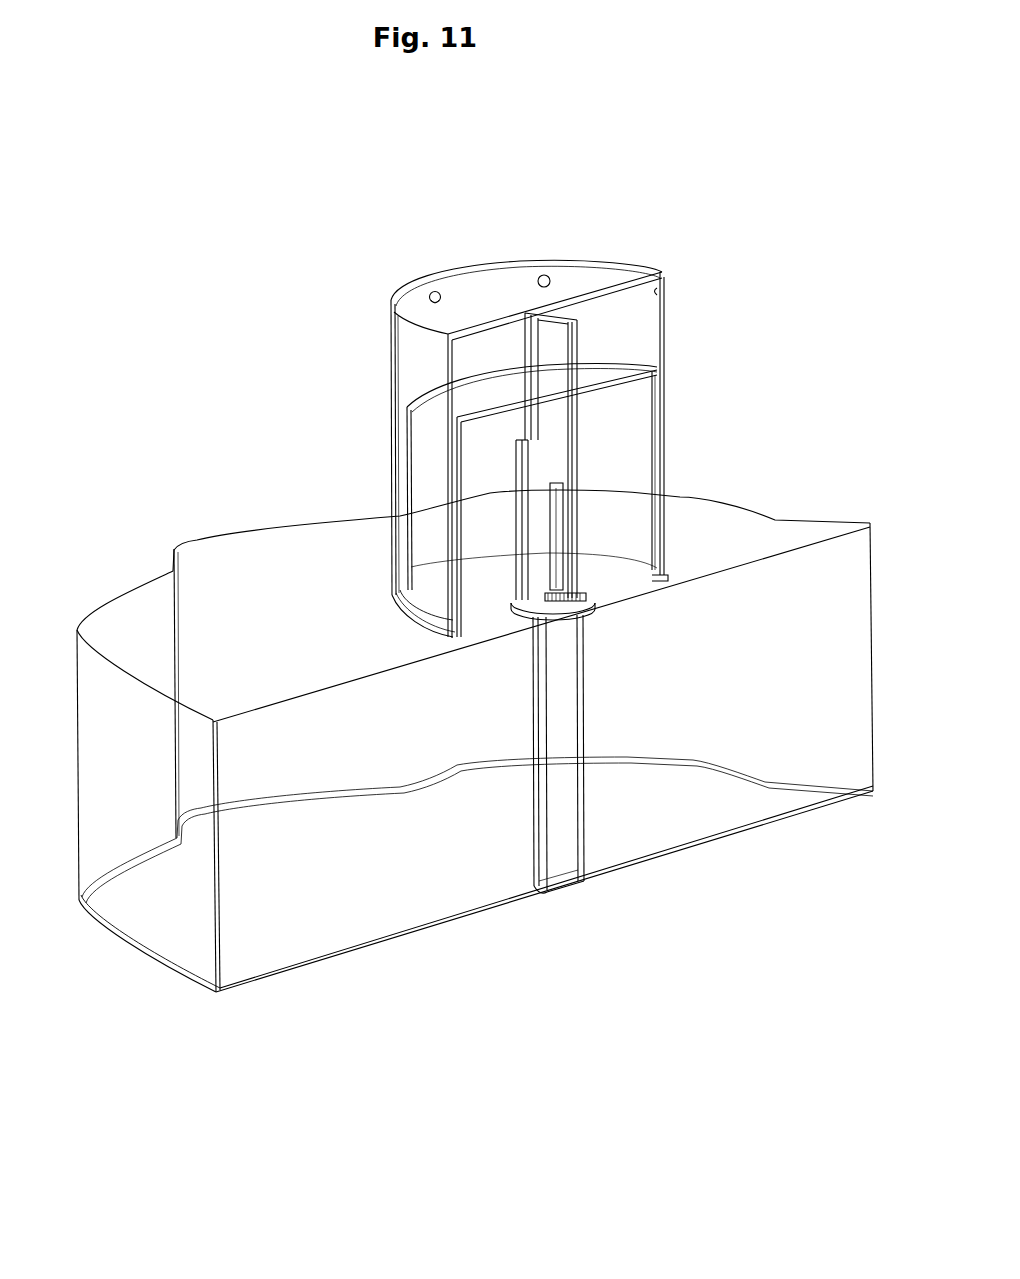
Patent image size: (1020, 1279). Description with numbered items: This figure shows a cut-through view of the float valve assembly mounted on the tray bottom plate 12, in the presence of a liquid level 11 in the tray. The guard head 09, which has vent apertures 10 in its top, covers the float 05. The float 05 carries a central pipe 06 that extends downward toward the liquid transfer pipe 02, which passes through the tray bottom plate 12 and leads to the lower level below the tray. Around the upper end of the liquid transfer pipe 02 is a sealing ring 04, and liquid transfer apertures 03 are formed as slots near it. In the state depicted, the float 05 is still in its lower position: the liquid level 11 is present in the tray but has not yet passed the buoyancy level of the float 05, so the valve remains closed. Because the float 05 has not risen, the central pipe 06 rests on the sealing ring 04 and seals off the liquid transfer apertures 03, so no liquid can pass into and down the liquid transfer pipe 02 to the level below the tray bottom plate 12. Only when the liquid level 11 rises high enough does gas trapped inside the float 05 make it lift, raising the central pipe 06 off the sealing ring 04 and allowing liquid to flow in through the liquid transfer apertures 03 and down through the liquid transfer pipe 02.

The liquid transfer pipe 02 is at (538, 776).
The liquid transfer aperture 03 is at (557, 531).
The sealing ring 04 is at (588, 608).
The float 05 is at (488, 402).
The central pipe 06 is at (518, 536).
The guard head 09 is at (487, 284).
The vent apertures 10 is at (434, 294).
The liquid level 11 is at (259, 573).
The tray bottom plate 12 is at (349, 873).